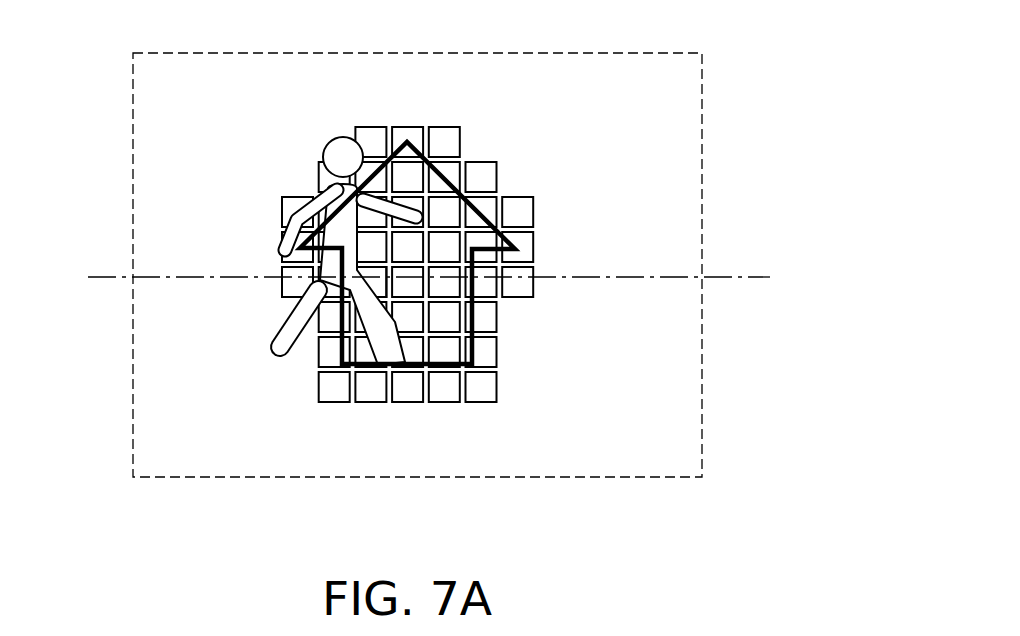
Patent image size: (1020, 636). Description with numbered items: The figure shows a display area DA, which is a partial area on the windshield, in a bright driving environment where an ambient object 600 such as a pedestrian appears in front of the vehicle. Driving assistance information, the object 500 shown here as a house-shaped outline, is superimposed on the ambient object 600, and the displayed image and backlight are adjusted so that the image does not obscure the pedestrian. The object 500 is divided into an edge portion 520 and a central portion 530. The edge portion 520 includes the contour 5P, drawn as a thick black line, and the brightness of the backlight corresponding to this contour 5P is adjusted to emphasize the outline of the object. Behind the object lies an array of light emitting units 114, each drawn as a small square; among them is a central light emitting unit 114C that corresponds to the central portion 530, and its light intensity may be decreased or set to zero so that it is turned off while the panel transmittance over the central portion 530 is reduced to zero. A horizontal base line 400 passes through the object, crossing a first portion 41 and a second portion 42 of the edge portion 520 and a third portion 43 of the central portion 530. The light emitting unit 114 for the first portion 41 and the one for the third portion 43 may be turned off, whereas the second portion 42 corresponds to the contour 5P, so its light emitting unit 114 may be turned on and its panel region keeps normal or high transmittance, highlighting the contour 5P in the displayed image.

The light emitting unit 114 is at (369, 137).
The edge portion 520 is at (443, 137).
The contour 5P is at (487, 213).
The central portion 530 is at (452, 252).
The first portion 41 is at (288, 287).
The second portion 42 is at (333, 273).
The third portion 43 is at (379, 282).
The central light emitting unit 114C is at (406, 411).
The ambient object 600 is at (335, 147).
The object 500 is at (447, 173).
The base line 400 is at (404, 278).
The display area DA is at (702, 100).